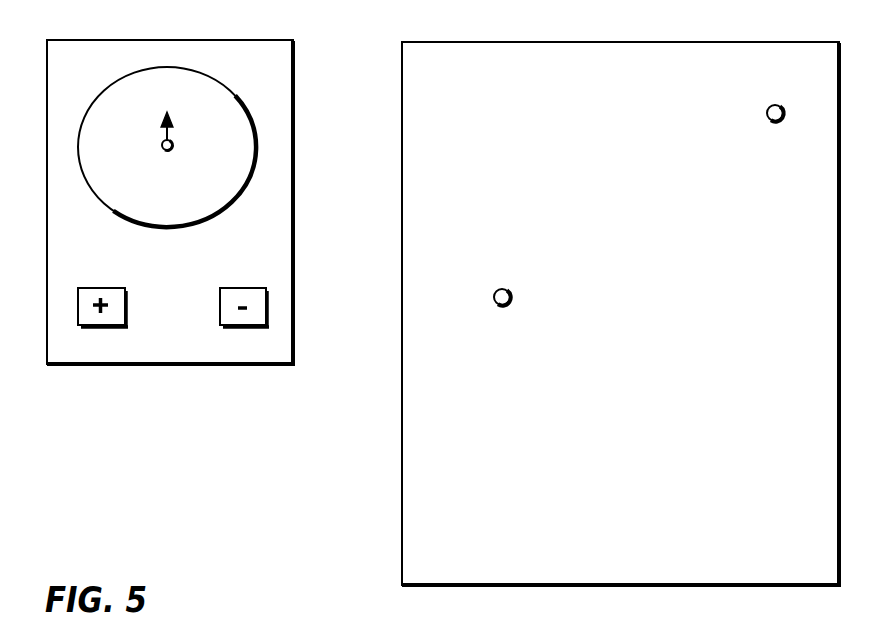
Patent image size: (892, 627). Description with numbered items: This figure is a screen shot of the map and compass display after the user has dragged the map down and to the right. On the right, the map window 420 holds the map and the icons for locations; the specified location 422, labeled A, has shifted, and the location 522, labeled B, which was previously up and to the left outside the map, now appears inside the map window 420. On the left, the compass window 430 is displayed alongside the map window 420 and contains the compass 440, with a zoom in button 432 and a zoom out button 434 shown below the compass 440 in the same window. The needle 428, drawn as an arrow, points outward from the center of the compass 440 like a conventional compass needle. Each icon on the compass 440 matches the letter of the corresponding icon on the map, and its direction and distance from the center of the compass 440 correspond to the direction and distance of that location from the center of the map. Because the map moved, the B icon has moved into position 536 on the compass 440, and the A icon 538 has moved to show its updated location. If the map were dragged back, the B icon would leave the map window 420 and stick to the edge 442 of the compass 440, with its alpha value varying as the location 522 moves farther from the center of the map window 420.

The map window 420 is at (593, 545).
The specified location 422 is at (510, 297).
The needle 428 is at (168, 130).
The compass window 430 is at (173, 333).
The zoom in button 432 is at (78, 298).
The zoom out button 434 is at (260, 288).
The compass 440 is at (185, 207).
The edge of compass 442 is at (100, 93).
The location 522 is at (767, 110).
The position of icon B on compass 536 is at (218, 102).
The icon A position on compass 538 is at (138, 163).